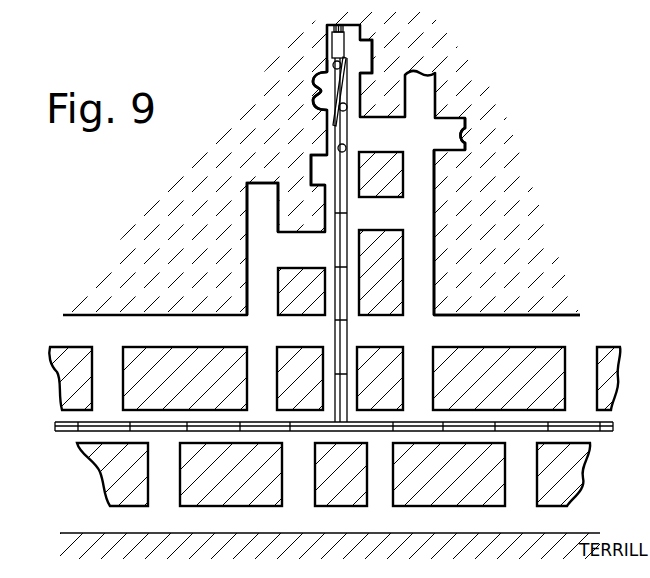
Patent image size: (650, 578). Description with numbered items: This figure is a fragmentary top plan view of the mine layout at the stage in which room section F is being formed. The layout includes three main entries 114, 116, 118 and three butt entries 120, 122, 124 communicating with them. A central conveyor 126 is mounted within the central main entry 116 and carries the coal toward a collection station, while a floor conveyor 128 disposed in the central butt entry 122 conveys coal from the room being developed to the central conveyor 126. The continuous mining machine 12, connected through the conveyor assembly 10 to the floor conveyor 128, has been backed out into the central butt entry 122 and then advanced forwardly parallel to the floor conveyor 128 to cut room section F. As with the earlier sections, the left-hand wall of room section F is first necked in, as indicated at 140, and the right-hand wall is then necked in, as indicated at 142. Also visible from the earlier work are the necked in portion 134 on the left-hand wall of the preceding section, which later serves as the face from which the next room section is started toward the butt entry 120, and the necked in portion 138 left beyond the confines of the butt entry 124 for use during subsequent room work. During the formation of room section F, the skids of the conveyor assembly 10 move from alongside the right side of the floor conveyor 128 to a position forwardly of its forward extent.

The conveyor assembly 10 is at (326, 117).
The continuous mining machine 12 is at (322, 42).
The room section F is at (320, 75).
The necked in portion 140 is at (316, 88).
The necked in portion 142 is at (371, 55).
The necked in portion 138 is at (467, 136).
The necked in portion 134 is at (312, 170).
The butt entry 120 is at (245, 265).
The floor conveyor 128 is at (339, 247).
The butt entry 124 is at (438, 258).
The main entry 114 is at (509, 317).
The central butt entry 122 is at (357, 312).
The central main entry 116 is at (505, 414).
The central conveyor 126 is at (601, 440).
The main entry 118 is at (262, 532).